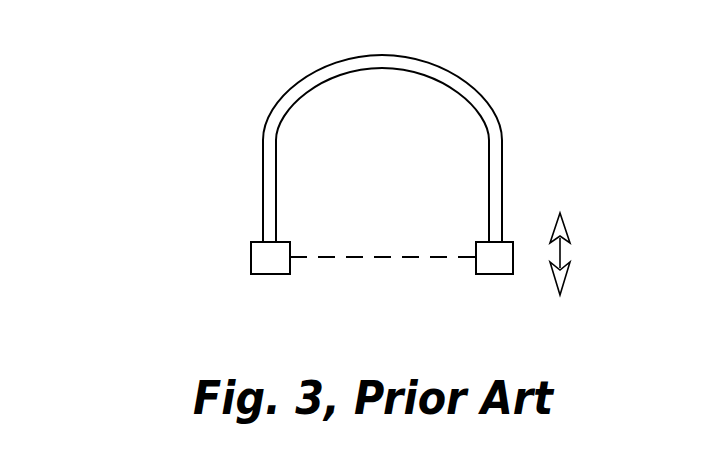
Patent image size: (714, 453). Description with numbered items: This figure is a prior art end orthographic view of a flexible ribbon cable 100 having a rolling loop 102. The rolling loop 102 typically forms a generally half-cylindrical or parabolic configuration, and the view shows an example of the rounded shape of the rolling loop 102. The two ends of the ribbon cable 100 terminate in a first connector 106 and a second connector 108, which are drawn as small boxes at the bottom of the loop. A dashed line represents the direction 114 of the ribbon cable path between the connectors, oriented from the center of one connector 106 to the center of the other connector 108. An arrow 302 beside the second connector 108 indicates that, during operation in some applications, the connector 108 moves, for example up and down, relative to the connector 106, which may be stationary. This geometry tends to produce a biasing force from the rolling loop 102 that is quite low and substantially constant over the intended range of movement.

The flexible ribbon cable 100 is at (189, 66).
The rolling loop 102 is at (483, 98).
The first connector 106 is at (265, 274).
The second connector 108 is at (492, 274).
The direction 114 is at (353, 257).
The arrow 302 is at (561, 254).